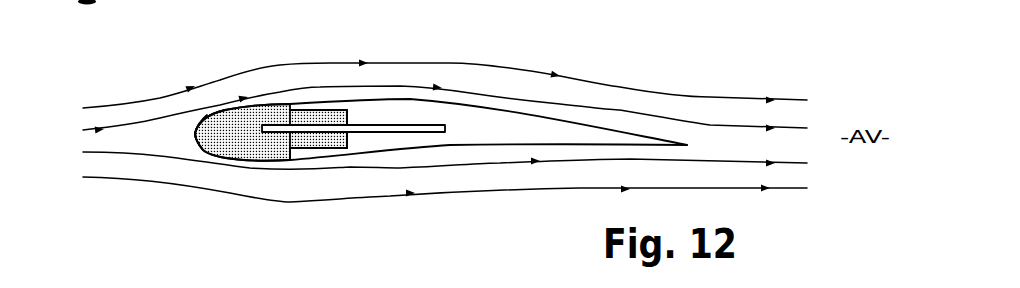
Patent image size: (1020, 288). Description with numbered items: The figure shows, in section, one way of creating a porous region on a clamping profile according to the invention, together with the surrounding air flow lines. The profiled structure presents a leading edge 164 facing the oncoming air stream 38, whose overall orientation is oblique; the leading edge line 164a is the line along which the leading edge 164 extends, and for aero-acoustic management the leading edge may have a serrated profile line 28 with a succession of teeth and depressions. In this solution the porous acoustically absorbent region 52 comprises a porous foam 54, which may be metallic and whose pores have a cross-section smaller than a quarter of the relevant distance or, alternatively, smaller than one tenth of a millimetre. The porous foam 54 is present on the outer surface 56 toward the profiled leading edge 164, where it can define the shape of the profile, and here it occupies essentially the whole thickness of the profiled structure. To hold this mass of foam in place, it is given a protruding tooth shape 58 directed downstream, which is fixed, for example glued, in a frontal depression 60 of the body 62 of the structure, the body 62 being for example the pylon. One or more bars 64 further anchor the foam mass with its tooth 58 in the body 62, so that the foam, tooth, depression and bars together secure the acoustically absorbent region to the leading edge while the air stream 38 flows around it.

The serrated profile line 28 is at (193, 157).
The air stream 38 is at (713, 100).
The porous acoustically absorbent region 52 is at (247, 123).
The porous foam 54 is at (197, 131).
The outer surface 56 is at (478, 103).
The protruding tooth shape 58 is at (310, 152).
The frontal depression 60 is at (343, 142).
The body 62 is at (557, 130).
The bar 64 is at (421, 133).
The leading edge 164 is at (233, 120).
The leading edge line 164a is at (195, 133).